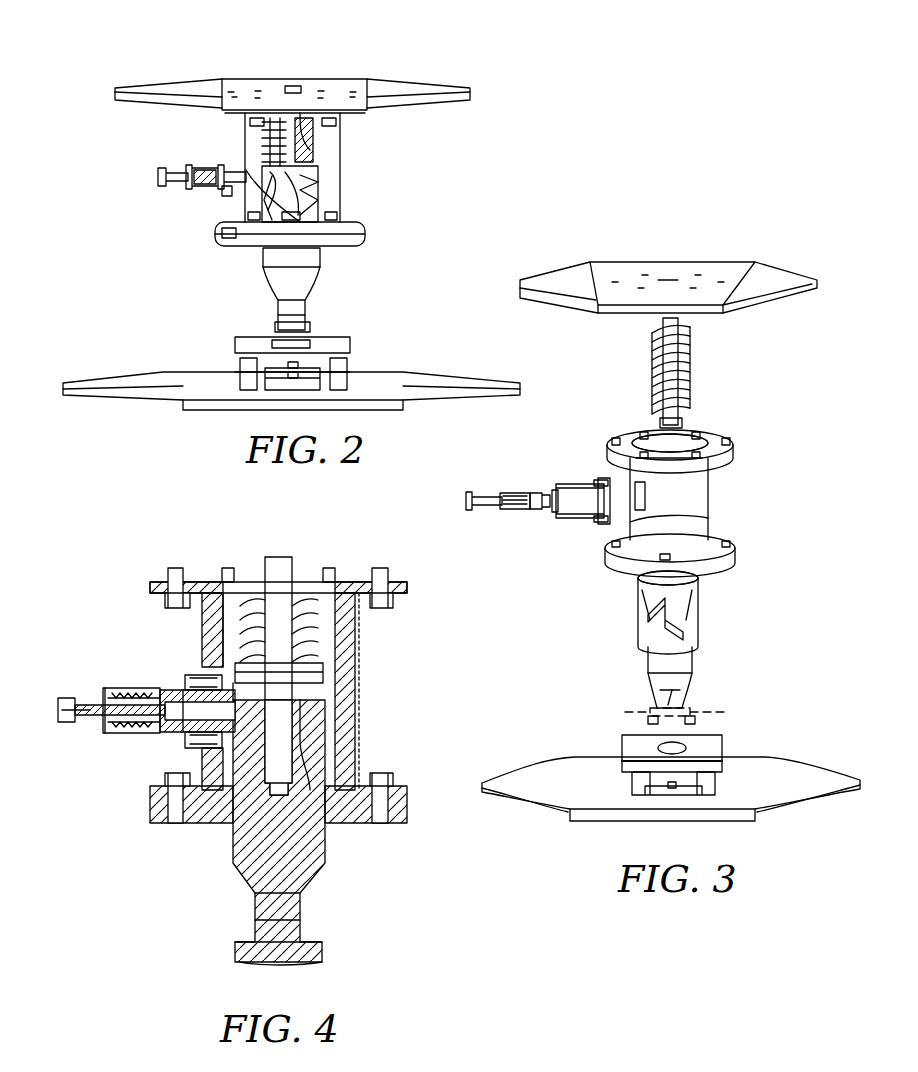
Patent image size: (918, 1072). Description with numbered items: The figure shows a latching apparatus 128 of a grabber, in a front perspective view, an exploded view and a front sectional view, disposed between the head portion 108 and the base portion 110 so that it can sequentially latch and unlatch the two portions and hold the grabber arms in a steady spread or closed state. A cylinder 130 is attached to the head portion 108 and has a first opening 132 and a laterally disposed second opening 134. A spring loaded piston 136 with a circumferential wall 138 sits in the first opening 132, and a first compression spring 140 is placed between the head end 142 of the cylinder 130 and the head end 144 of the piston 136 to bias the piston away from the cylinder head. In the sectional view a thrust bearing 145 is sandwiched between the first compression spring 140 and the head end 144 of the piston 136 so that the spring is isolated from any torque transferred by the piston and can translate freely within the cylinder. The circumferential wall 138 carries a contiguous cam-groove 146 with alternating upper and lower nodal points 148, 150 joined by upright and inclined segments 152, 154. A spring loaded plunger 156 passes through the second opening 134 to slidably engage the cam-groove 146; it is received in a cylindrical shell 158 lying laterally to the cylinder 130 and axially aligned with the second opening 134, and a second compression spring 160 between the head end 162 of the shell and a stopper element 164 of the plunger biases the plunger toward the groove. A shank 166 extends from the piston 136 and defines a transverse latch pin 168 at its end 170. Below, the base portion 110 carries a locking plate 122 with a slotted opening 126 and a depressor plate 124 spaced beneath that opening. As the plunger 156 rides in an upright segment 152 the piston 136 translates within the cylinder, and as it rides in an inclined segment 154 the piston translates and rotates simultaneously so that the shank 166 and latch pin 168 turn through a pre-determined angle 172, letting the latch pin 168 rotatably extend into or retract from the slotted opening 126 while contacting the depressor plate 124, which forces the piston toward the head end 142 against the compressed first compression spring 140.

In FIG. 2, the head portion 108 is at (195, 90).
In FIG. 3, the head portion 108 is at (578, 282).
In FIG. 2, the base portion 110 is at (163, 383).
In FIG. 3, the base portion 110 is at (550, 782).
In FIG. 2, the locking plate 122 is at (340, 342).
In FIG. 3, the locking plate 122 is at (706, 745).
In FIG. 2, the depressor plate 124 is at (268, 380).
In FIG. 3, the depressor plate 124 is at (652, 782).
In FIG. 2, the slotted opening 126 is at (272, 338).
In FIG. 3, the slotted opening 126 is at (652, 722).
In FIG. 2, the latching apparatus 128 is at (505, 74).
In FIG. 3, the latching apparatus 128 is at (810, 243).
In FIG. 4, the latching apparatus 128 is at (134, 545).
In FIG. 2, the cylinder 130 is at (343, 124).
In FIG. 3, the cylinder 130 is at (734, 490).
In FIG. 4, the cylinder 130 is at (360, 670).
In FIG. 3, the first opening 132 is at (692, 426).
In FIG. 3, the second opening 134 is at (642, 520).
In FIG. 4, the second opening 134 is at (232, 683).
In FIG. 2, the spring loaded piston 136 is at (340, 200).
In FIG. 3, the spring loaded piston 136 is at (707, 618).
In FIG. 4, the spring loaded piston 136 is at (340, 760).
In FIG. 2, the circumferential wall 138 is at (250, 156).
In FIG. 2, the first compression spring 140 is at (255, 135).
In FIG. 3, the first compression spring 140 is at (655, 352).
In FIG. 4, the first compression spring 140 is at (252, 600).
In FIG. 2, the head end of the cylinder 142 is at (333, 118).
In FIG. 3, the head end of the cylinder 142 is at (724, 462).
In FIG. 4, the head end of the cylinder 142 is at (405, 612).
In FIG. 2, the head end of the piston 144 is at (312, 170).
In FIG. 3, the head end of the piston 144 is at (640, 578).
In FIG. 4, the head end of the piston 144 is at (350, 690).
In FIG. 4, the thrust bearing 145 is at (200, 625).
In FIG. 2, the cam-groove 146 is at (340, 180).
In FIG. 2, the upper nodal points 148 is at (322, 236).
In FIG. 3, the upper nodal points 148 is at (702, 585).
In FIG. 2, the lower nodal points 150 is at (258, 232).
In FIG. 3, the lower nodal points 150 is at (688, 628).
In FIG. 2, the upright segments 152 is at (244, 214).
In FIG. 2, the inclined segments 154 is at (320, 262).
In FIG. 3, the spring loaded plunger 156 is at (478, 508).
In FIG. 4, the spring loaded plunger 156 is at (68, 698).
In FIG. 3, the cylindrical shell 158 is at (588, 500).
In FIG. 4, the cylindrical shell 158 is at (175, 700).
In FIG. 2, the second compression spring 160 is at (218, 192).
In FIG. 3, the second compression spring 160 is at (502, 505).
In FIG. 4, the second compression spring 160 is at (134, 734).
In FIG. 3, the head end of the cylindrical shell 162 is at (560, 516).
In FIG. 3, the stopper element 164 is at (532, 494).
In FIG. 2, the shank 166 is at (292, 300).
In FIG. 3, the shank 166 is at (652, 694).
In FIG. 4, the shank 166 is at (292, 897).
In FIG. 2, the latch pin 168 is at (310, 326).
In FIG. 3, the latch pin 168 is at (702, 712).
In FIG. 4, the latch pin 168 is at (312, 950).
In FIG. 2, the end of the shank 170 is at (302, 310).
In FIG. 4, the end of the shank 170 is at (292, 930).
In FIG. 3, the pre-determined angle 172 is at (655, 702).